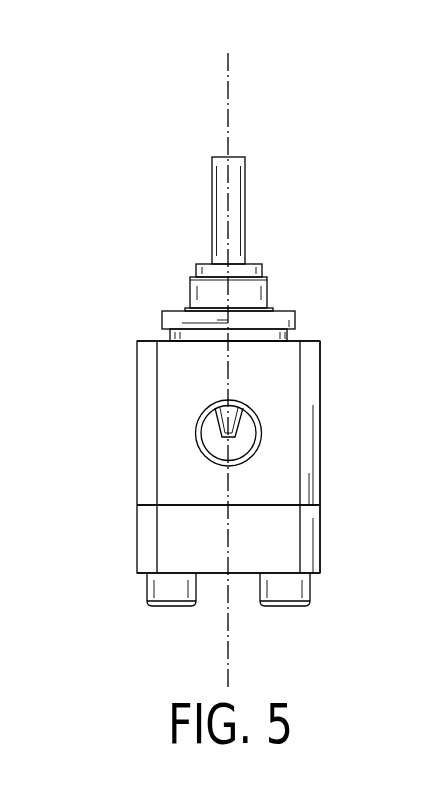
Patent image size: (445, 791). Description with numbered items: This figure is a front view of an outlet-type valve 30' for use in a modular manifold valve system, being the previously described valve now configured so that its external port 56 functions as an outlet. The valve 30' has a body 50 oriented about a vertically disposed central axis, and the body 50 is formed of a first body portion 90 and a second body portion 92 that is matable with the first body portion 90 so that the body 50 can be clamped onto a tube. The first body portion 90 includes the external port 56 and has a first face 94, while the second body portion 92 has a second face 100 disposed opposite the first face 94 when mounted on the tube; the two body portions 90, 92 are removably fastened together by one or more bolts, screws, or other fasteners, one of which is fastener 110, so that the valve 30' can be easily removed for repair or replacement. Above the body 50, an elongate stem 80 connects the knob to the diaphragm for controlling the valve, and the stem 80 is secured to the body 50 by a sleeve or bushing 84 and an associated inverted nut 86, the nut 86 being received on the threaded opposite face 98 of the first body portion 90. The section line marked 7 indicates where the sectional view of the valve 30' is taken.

The section line 7- 7 is at (228, 111).
The outlet valve 30' is at (322, 92).
The stem 80 is at (245, 204).
The bushing 84 is at (268, 287).
The inverted nut 86 is at (295, 318).
The body 50 is at (356, 375).
The opposite face 98 is at (147, 341).
The first body portion 90 is at (320, 423).
The external port 56 is at (210, 434).
The second face 100 is at (165, 505).
The first face 94 is at (288, 508).
The second body portion 92 is at (320, 558).
The fastener 110 is at (290, 607).